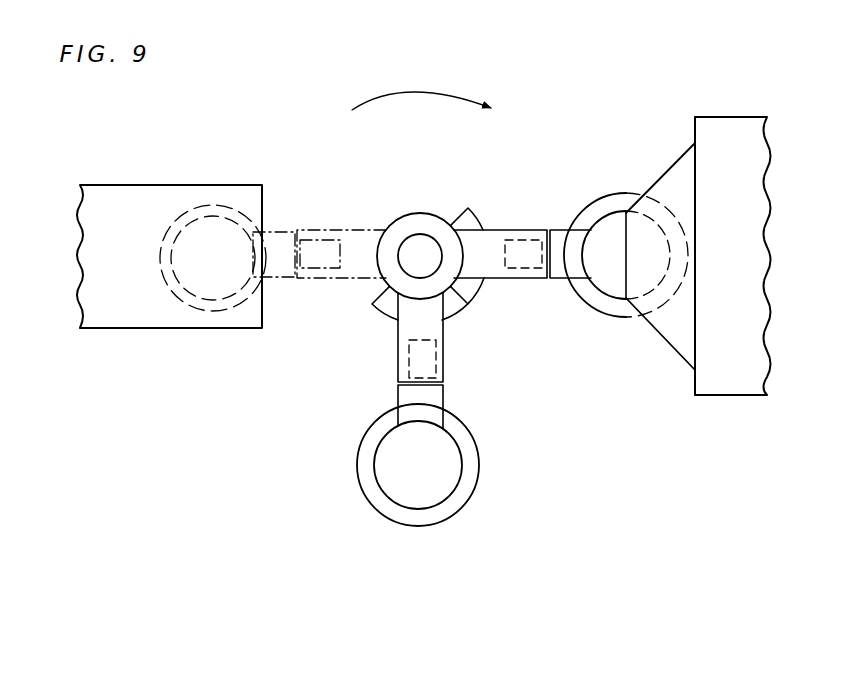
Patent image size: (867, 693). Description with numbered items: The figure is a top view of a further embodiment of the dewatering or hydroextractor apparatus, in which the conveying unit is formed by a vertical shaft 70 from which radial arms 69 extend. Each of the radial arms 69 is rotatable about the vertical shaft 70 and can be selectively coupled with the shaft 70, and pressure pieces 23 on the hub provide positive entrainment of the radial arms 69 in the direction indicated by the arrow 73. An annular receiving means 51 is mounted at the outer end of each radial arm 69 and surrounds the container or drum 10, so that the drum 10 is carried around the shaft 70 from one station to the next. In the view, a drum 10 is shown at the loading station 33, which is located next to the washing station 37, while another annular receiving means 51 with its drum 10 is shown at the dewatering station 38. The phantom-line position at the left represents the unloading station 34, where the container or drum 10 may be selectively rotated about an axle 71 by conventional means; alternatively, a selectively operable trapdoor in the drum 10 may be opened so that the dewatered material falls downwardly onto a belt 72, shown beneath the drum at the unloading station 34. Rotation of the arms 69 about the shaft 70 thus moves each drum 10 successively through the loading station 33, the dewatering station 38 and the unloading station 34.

The container or drum 10 is at (600, 218).
The pressure pieces 23 is at (476, 206).
The loading station 33 is at (612, 190).
The unloading station 34 is at (274, 203).
The washing station 37 is at (657, 182).
The dewatering station 38 is at (350, 431).
The annular receiving means 51 is at (460, 519).
The radial arms 69 is at (499, 283).
The vertical shaft 70 is at (416, 233).
The axle 71 is at (324, 240).
The belt 72 is at (161, 183).
The arrow 73 is at (456, 92).